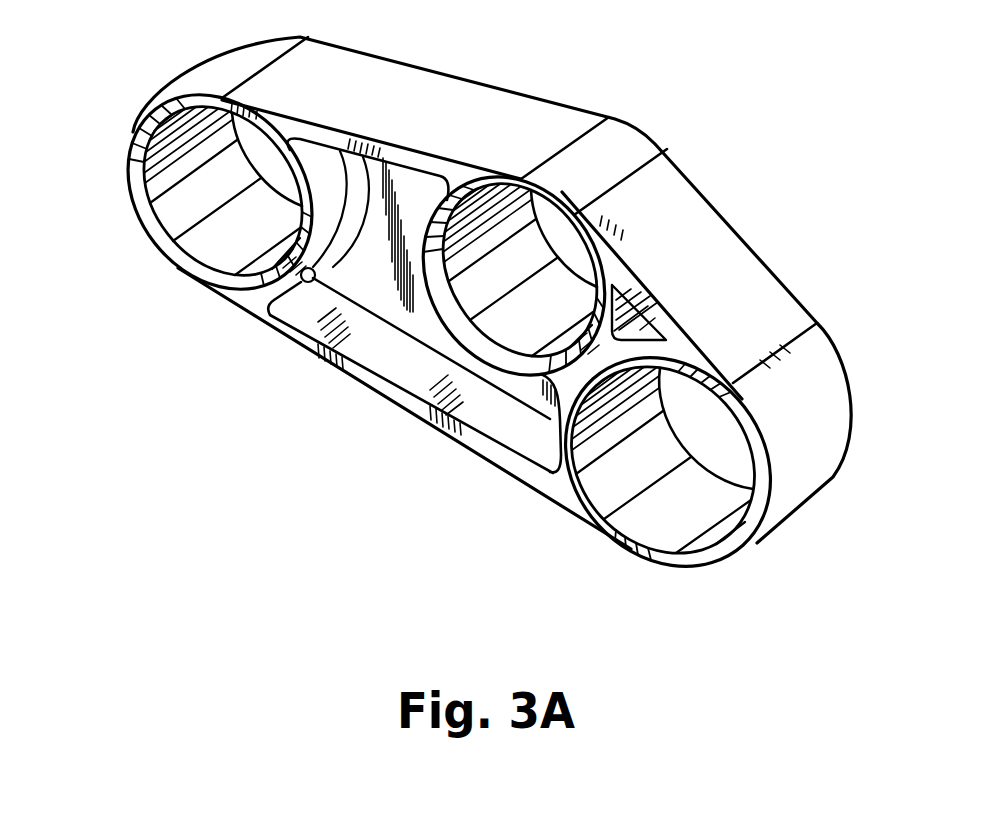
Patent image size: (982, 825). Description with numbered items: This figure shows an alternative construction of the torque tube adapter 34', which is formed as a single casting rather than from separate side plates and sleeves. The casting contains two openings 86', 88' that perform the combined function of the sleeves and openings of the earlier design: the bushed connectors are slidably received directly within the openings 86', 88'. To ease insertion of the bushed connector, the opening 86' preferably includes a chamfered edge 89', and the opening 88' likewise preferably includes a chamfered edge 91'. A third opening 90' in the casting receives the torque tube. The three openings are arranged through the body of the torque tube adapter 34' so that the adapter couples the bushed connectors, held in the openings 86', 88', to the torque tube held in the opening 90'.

The torque tube adapter 34' is at (492, 293).
The opening 86' is at (216, 180).
The opening 88' is at (514, 218).
The chamfered edge 89' is at (191, 218).
The opening 90' is at (674, 469).
The chamfered edge 91' is at (514, 350).